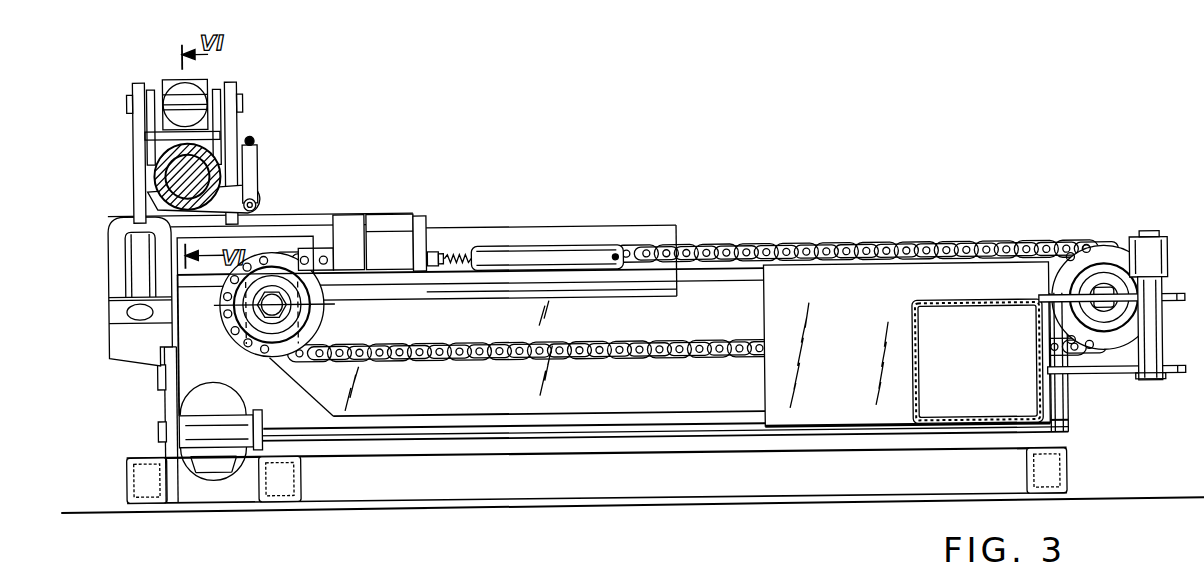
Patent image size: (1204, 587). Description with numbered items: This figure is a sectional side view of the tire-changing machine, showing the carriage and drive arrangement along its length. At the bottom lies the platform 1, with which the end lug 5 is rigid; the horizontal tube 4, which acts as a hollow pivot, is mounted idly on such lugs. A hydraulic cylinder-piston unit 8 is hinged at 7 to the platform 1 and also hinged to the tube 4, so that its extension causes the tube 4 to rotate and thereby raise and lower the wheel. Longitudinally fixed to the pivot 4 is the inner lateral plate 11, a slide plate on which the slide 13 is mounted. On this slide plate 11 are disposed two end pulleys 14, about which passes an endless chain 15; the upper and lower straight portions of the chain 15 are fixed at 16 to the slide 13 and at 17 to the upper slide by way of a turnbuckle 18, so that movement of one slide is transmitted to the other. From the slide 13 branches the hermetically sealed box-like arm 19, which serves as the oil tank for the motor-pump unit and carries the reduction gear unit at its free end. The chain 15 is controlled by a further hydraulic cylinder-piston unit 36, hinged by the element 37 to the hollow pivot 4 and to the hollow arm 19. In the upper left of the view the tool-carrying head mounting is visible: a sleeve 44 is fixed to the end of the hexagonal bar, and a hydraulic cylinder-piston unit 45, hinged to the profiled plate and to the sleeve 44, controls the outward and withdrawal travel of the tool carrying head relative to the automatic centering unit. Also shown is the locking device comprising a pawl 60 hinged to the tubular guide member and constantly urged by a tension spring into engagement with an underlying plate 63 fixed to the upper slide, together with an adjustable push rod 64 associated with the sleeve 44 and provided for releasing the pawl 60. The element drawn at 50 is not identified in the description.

The platform 1 is at (1067, 463).
The horizontal tube 4 is at (228, 387).
The end lug 5 is at (158, 398).
The hinge 7 is at (158, 430).
The hydraulic cylinder-piston unit 8 is at (232, 406).
The inner lateral plate 11 is at (497, 398).
The slide 13 is at (836, 367).
The end pulley 14 is at (314, 311).
The endless chain 15 is at (795, 245).
The fixing point 16 is at (757, 358).
The fixing point 17 is at (414, 214).
The turnbuckle 18 is at (552, 243).
The box-like arm 19 is at (916, 348).
The hydraulic cylinder-piston unit 36 is at (650, 226).
The hinge element 37 is at (110, 325).
The sleeve 44 is at (150, 194).
The hydraulic cylinder-piston unit 45 is at (184, 80).
The hatched roller 50 is at (162, 152).
The pawl 60 is at (262, 168).
The plate 63 is at (320, 213).
The push rod 64 is at (258, 204).